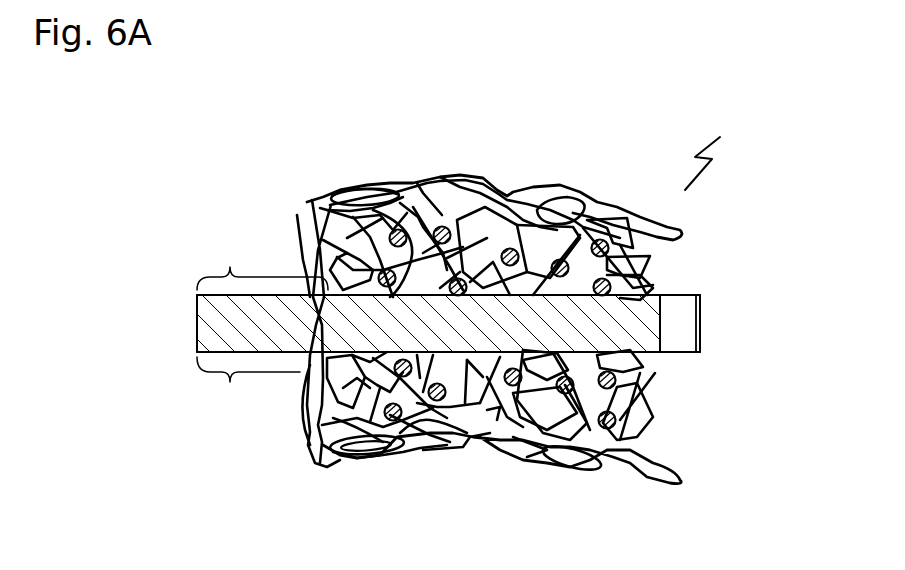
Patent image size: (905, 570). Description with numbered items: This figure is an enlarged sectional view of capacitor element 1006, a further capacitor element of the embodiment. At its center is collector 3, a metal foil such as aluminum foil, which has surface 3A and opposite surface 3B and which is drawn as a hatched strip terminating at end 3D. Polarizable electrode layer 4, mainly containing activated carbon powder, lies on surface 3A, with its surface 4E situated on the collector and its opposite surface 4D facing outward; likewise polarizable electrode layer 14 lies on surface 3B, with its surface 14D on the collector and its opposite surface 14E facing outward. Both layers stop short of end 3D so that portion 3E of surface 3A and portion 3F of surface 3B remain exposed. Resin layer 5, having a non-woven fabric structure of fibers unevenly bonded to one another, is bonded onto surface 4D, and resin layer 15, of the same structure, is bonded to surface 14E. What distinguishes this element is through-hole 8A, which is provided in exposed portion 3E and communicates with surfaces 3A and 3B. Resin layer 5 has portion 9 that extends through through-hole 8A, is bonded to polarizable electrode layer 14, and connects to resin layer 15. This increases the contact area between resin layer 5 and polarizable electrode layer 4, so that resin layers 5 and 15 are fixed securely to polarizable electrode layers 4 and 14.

The capacitor element 1006 is at (713, 148).
The collector 3 is at (702, 327).
The surface 3A is at (210, 281).
The surface 3B is at (208, 373).
The end 3D is at (203, 320).
The portion 3E is at (262, 261).
The portion 3F is at (248, 387).
The polarizable electrode layer 4 is at (692, 240).
The surface 4D is at (378, 185).
The surface 4E is at (400, 290).
The resin layer 5 is at (548, 196).
The through-hole 8A is at (322, 298).
The portion 9 is at (309, 258).
The polarizable electrode layer 14 is at (692, 355).
The surface 14D is at (405, 422).
The surface 14E is at (372, 430).
The resin layer 15 is at (580, 458).